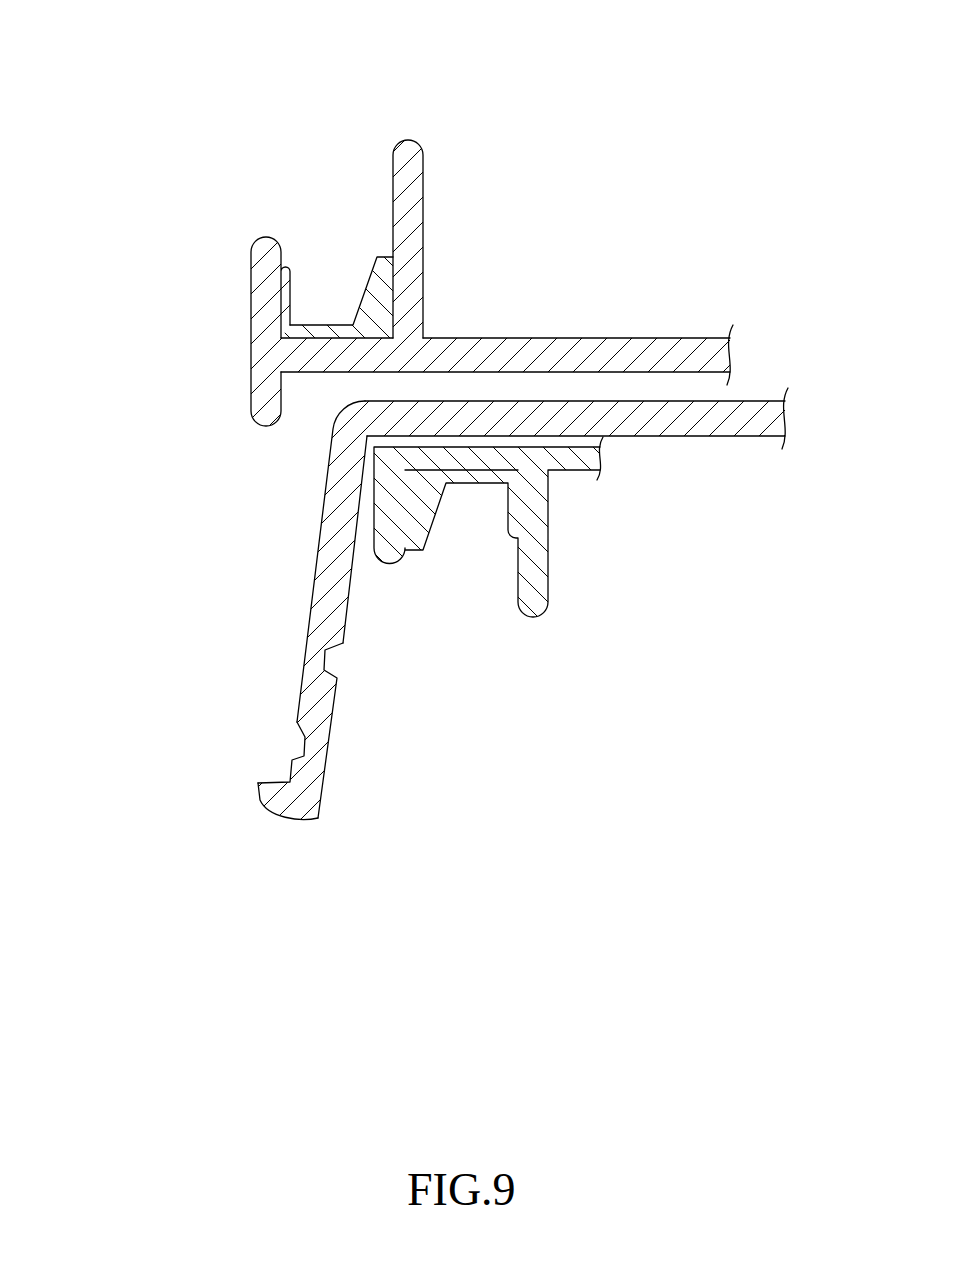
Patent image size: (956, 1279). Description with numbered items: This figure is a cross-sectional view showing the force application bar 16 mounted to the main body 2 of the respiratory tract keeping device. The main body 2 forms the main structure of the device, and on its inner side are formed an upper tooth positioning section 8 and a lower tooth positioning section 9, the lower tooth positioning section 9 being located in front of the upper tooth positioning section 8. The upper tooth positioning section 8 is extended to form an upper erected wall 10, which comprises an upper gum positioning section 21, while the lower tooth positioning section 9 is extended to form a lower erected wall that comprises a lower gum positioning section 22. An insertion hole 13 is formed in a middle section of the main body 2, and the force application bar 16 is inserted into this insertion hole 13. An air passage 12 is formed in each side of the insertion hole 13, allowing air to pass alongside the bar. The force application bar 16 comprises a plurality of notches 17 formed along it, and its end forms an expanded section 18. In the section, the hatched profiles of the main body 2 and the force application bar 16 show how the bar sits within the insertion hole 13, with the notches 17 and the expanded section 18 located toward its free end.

The upper tooth positioning section 8 is at (296, 218).
The main body 2 is at (423, 175).
The upper gum positioning section 21 is at (363, 287).
The upper erected wall 10 is at (260, 320).
The air passage 12 is at (320, 395).
The insertion hole 13 is at (522, 392).
The force application bar 16 is at (725, 423).
The notches 17 is at (297, 742).
The expanded section 18 is at (257, 801).
The lower tooth positioning section 9 is at (421, 612).
The lower gum positioning section 22 is at (428, 538).